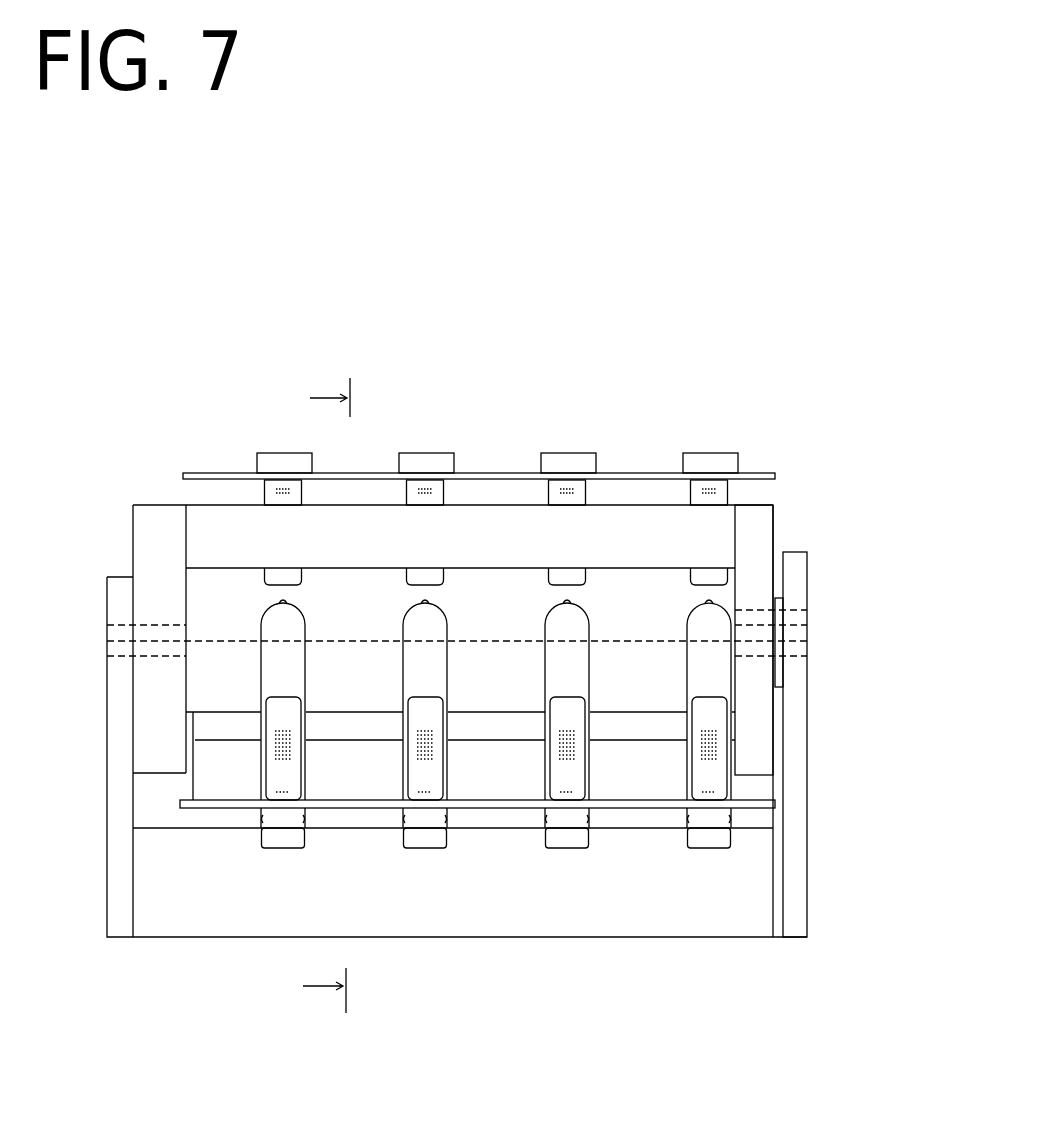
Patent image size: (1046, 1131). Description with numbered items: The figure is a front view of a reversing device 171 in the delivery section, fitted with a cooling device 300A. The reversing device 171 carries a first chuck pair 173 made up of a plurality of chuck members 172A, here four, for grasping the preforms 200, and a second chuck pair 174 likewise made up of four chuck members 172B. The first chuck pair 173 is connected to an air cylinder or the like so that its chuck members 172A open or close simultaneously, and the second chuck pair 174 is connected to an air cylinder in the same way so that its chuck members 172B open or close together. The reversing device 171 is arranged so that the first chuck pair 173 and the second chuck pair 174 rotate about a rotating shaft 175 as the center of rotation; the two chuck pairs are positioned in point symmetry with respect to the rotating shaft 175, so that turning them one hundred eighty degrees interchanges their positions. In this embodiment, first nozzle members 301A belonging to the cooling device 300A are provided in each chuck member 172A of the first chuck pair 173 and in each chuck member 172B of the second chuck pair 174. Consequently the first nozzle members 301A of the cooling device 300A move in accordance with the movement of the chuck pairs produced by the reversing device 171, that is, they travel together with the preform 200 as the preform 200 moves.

The reversing device 171 is at (741, 343).
The chuck member 172A is at (630, 975).
The chuck member 172B is at (707, 460).
The first chuck pair 173 is at (682, 1015).
The second chuck pair 174 is at (683, 355).
The rotating shaft 175 is at (787, 650).
The preform 200 is at (810, 611).
The cooling device 300A is at (384, 648).
The first nozzle member 301A is at (705, 715).